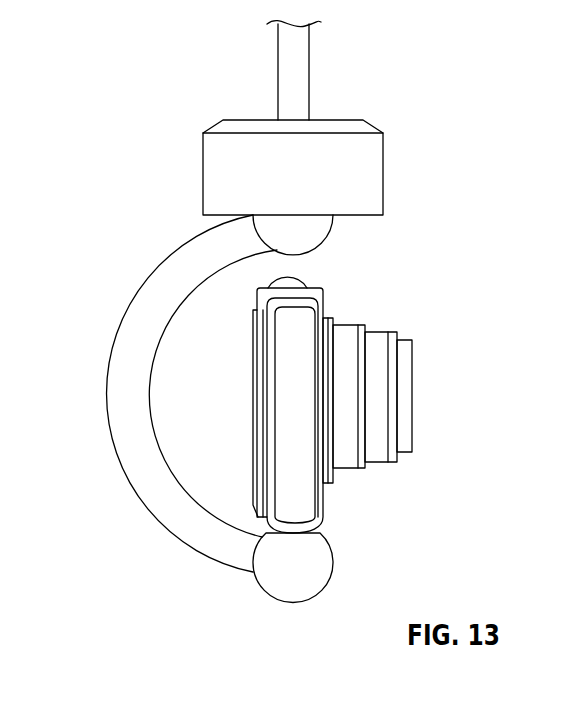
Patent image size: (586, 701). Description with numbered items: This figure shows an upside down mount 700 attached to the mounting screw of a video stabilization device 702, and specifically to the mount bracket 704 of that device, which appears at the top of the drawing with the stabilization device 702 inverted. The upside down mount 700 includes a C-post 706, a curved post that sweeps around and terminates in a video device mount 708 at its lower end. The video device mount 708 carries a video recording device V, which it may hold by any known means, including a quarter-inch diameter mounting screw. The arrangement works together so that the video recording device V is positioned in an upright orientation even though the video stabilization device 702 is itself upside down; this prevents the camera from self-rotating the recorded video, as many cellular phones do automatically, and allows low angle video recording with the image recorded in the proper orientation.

The upside down mount 700 is at (225, 409).
The video stabilization device 702 is at (375, 150).
The mount bracket 704 is at (203, 190).
The C-post 706 is at (173, 515).
The video device mount 708 is at (325, 560).
The video recording device V is at (327, 317).